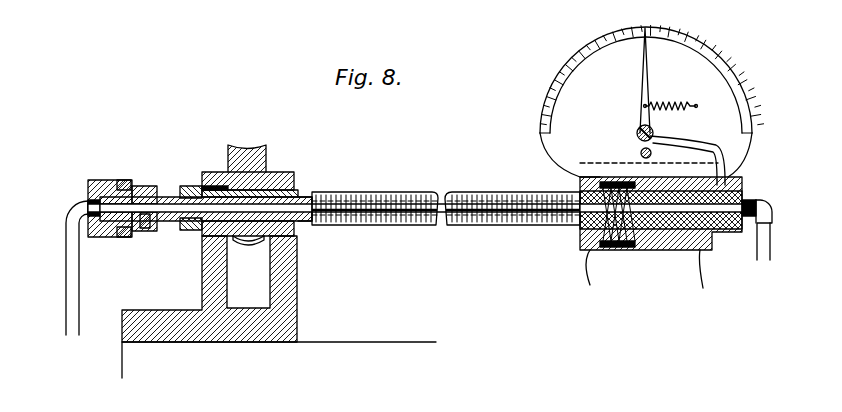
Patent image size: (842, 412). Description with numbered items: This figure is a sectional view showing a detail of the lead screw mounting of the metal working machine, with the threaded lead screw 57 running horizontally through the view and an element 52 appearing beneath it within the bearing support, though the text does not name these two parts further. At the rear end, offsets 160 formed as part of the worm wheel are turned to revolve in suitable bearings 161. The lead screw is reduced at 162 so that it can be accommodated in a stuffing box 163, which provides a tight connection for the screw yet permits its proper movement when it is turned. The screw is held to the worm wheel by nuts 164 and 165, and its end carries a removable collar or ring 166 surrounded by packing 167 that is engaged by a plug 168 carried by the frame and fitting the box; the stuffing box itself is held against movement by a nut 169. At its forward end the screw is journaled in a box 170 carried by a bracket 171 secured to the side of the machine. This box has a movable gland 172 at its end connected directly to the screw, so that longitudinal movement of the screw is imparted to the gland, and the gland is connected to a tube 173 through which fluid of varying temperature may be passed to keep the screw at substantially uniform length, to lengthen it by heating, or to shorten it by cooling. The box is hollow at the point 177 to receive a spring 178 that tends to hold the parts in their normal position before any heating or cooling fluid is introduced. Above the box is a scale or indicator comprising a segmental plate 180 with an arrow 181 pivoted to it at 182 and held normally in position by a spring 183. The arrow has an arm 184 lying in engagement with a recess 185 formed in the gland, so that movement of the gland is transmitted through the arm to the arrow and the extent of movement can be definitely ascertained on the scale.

The cam follower / slot piece 52 is at (248, 244).
The threaded shaft 57 is at (370, 226).
The offsets 160 is at (226, 178).
The bearings 161 is at (310, 268).
The reduced portion of lead screw 162 is at (298, 228).
The stuffing box 163 is at (158, 180).
The nut 164 is at (200, 186).
The nut 165 is at (190, 186).
The removable collar or ring 166 is at (153, 228).
The packing 167 is at (148, 238).
The plug 168 is at (88, 183).
The nut 169 is at (128, 180).
The box 170 is at (586, 250).
The bracket 171 is at (661, 224).
The movable gland 172 is at (722, 246).
The tube 173 is at (772, 238).
The hollow point of box 177 is at (594, 250).
The spring 178 is at (592, 176).
The segmental plate 180 is at (652, 101).
The arrow 181 is at (643, 58).
The pivot 182 is at (636, 130).
The spring 183 is at (667, 104).
The arm 184 is at (706, 144).
The recess 185 is at (730, 184).